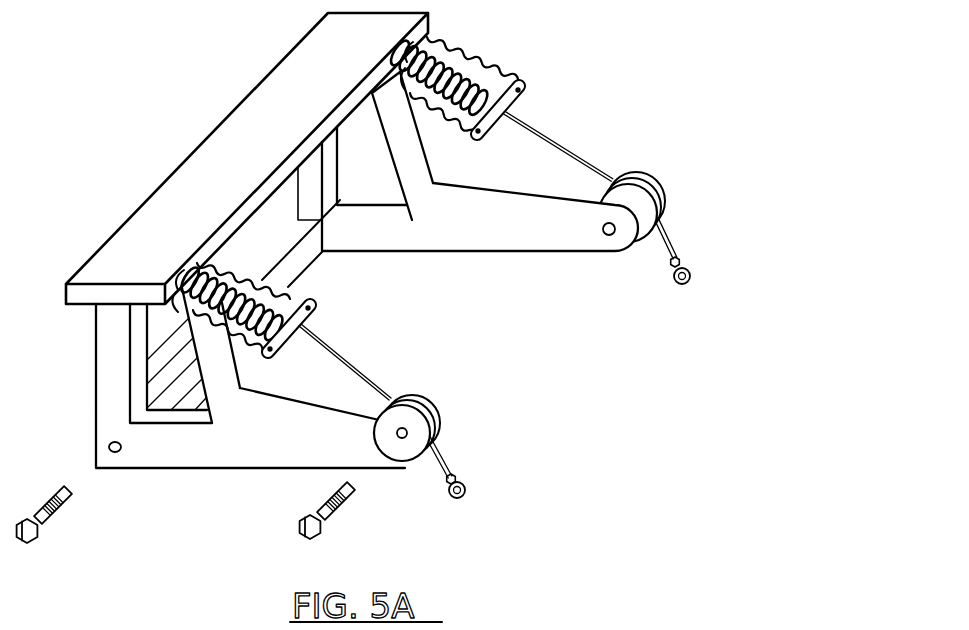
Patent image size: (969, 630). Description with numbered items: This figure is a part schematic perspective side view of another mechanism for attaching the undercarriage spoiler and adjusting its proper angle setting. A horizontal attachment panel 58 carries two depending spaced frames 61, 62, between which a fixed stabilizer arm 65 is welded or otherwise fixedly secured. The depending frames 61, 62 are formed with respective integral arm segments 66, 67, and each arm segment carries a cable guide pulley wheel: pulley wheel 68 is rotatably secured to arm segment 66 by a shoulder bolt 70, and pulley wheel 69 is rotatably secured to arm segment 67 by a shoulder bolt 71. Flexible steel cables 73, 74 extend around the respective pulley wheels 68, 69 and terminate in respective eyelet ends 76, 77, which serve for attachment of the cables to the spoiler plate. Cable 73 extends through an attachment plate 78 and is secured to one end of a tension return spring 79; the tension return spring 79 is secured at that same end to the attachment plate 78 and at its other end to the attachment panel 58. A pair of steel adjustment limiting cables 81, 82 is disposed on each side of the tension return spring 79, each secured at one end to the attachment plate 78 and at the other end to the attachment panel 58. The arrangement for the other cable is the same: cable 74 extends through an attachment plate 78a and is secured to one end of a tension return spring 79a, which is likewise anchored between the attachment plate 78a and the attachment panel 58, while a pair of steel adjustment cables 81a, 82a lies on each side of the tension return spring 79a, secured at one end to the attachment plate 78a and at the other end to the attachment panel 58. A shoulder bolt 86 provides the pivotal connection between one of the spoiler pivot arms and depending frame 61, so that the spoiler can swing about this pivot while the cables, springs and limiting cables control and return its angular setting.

The horizontal attachment panel 58 is at (268, 178).
The depending frame 62 is at (312, 167).
The fixed stabilizer arm 65 is at (270, 243).
The depending frame 61 is at (110, 408).
The arm segment 66 is at (270, 470).
The arm segment 67 is at (570, 253).
The pulley wheel 68 is at (430, 412).
The pulley wheel 69 is at (662, 193).
The shoulder bolt 70 is at (327, 527).
The shoulder bolt 71 is at (613, 236).
The flexible steel cable 73 is at (385, 397).
The flexible steel cable 74 is at (543, 137).
The eyelet end 76 is at (465, 480).
The eyelet end 77 is at (690, 263).
The attachment plate 78 is at (313, 305).
The attachment plate 78a is at (520, 86).
The tension return spring 79 is at (197, 265).
The tension return spring 79a is at (480, 78).
The adjustment limiting cable 81 is at (197, 300).
The adjustment cable 81a is at (445, 123).
The adjustment limiting cable 82 is at (300, 293).
The adjustment cable 82a is at (463, 63).
The shoulder bolt 86 is at (47, 527).